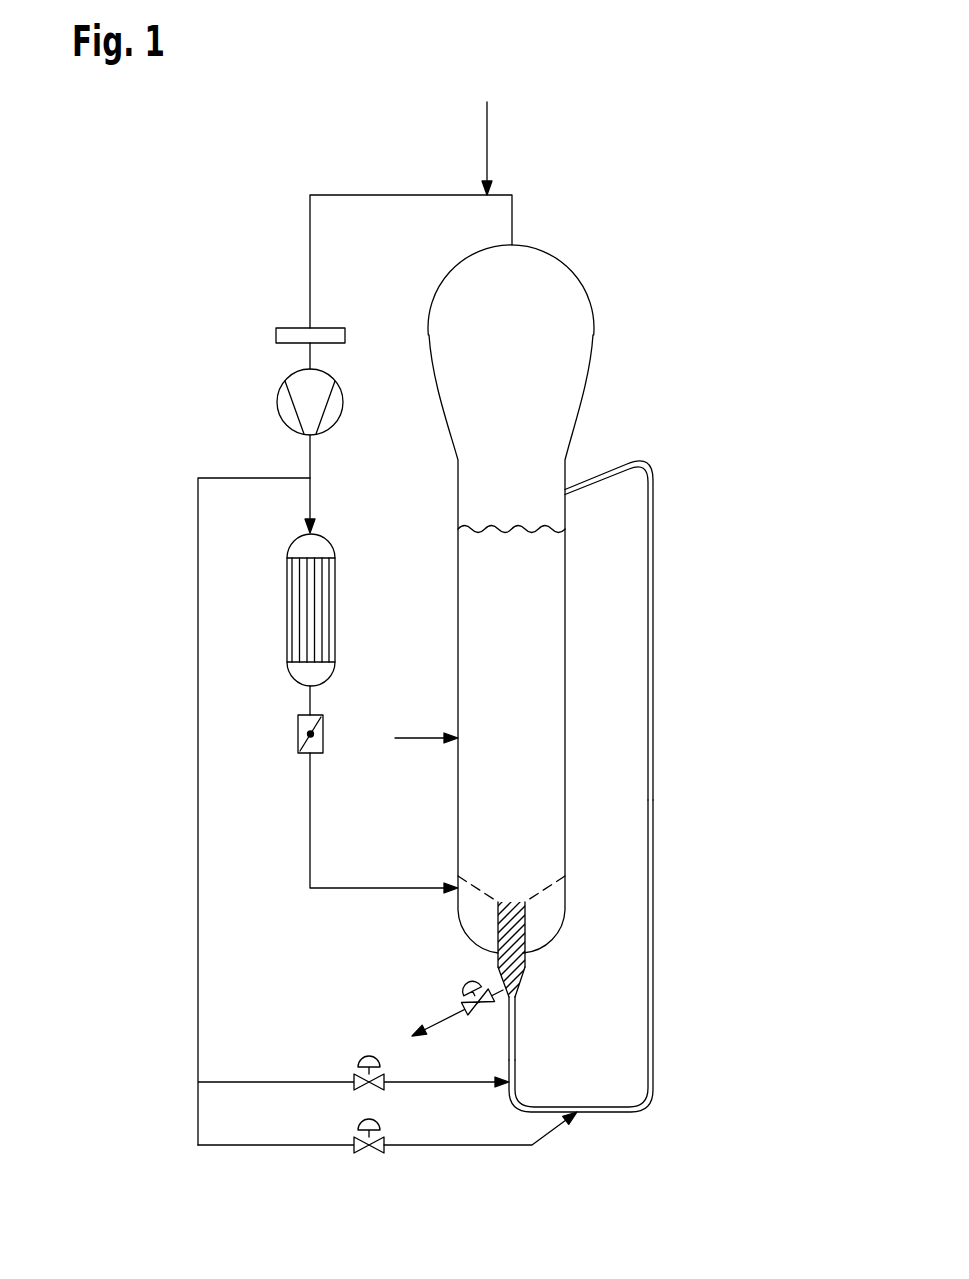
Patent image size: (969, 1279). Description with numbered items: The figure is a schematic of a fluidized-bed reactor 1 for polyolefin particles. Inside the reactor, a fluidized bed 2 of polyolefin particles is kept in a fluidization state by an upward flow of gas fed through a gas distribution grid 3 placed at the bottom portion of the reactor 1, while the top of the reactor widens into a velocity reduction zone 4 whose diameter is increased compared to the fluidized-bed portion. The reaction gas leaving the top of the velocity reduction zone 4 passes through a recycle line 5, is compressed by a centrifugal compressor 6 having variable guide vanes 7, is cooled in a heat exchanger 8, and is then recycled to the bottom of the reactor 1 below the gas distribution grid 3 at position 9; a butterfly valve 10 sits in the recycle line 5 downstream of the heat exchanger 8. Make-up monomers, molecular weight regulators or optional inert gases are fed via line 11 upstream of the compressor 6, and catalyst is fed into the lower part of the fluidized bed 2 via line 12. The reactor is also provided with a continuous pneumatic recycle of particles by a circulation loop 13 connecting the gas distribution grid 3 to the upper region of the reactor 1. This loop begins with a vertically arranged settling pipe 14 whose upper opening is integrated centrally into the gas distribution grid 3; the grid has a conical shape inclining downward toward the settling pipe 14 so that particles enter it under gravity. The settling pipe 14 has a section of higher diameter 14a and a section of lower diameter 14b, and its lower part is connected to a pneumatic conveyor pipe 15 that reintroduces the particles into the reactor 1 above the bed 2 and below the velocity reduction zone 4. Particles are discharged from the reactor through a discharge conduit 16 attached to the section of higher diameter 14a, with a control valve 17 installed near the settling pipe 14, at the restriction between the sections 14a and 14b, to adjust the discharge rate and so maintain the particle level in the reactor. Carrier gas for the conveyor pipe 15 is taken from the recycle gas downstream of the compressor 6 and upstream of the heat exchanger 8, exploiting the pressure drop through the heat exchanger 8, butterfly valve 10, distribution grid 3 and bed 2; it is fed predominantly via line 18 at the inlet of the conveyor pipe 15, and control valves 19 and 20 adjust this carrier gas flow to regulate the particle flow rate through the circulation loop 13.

The fluidized-bed reactor 1 is at (452, 569).
The fluidized bed 2 is at (480, 617).
The gas distribution grid 3 is at (544, 878).
The velocity reduction zone 4 is at (577, 292).
The recycle line 5 is at (512, 222).
The centrifugal compressor 6 is at (278, 405).
The variable guide vanes 7 is at (276, 333).
The heat exchanger 8 is at (287, 605).
The position 9 is at (457, 885).
The butterfly valve 10 is at (298, 733).
The line 11 is at (487, 138).
The line 12 is at (413, 737).
The circulation loop 13 is at (664, 756).
The settling pipe 14 is at (540, 957).
The section of higher diameter 14a is at (527, 988).
The section of lower diameter 14b is at (515, 1055).
The pneumatic conveyor pipe 15 is at (655, 880).
The discharge conduit 16 is at (448, 1018).
The control valve 17 is at (466, 986).
The line 18 is at (480, 1148).
The control valve 19 is at (372, 1153).
The control valve 20 is at (368, 1056).